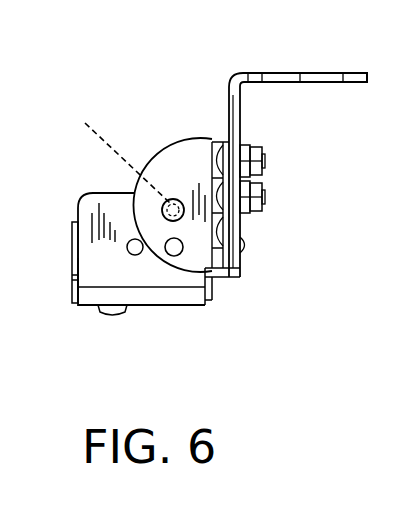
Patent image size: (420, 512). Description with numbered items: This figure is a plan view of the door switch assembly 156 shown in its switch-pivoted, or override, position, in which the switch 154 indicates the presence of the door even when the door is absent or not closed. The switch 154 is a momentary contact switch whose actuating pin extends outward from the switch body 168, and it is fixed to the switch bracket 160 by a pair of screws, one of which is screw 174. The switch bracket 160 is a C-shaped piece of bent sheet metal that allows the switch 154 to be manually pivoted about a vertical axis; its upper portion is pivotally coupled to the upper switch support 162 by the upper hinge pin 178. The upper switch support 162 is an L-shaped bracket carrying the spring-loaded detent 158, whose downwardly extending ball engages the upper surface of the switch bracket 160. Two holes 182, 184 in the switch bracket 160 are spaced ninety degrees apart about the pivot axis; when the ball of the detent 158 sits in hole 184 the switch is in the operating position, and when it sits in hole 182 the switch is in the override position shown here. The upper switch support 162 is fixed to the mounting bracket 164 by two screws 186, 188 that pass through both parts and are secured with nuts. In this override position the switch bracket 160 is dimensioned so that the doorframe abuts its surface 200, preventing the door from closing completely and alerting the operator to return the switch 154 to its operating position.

The switch 154 is at (72, 243).
The door switch assembly 156 is at (209, 80).
The spring-loaded detent 158 is at (172, 198).
The switch bracket 160 is at (118, 205).
The upper switch support 162 is at (193, 162).
The mounting bracket 164 is at (297, 78).
The switch body 168 is at (72, 260).
The screw 174 is at (110, 315).
The upper hinge pin 178 is at (176, 256).
The hole 182 is at (114, 153).
The hole 184 is at (128, 250).
The screw 186 is at (265, 160).
The screw 188 is at (265, 192).
The surface 200 is at (163, 305).